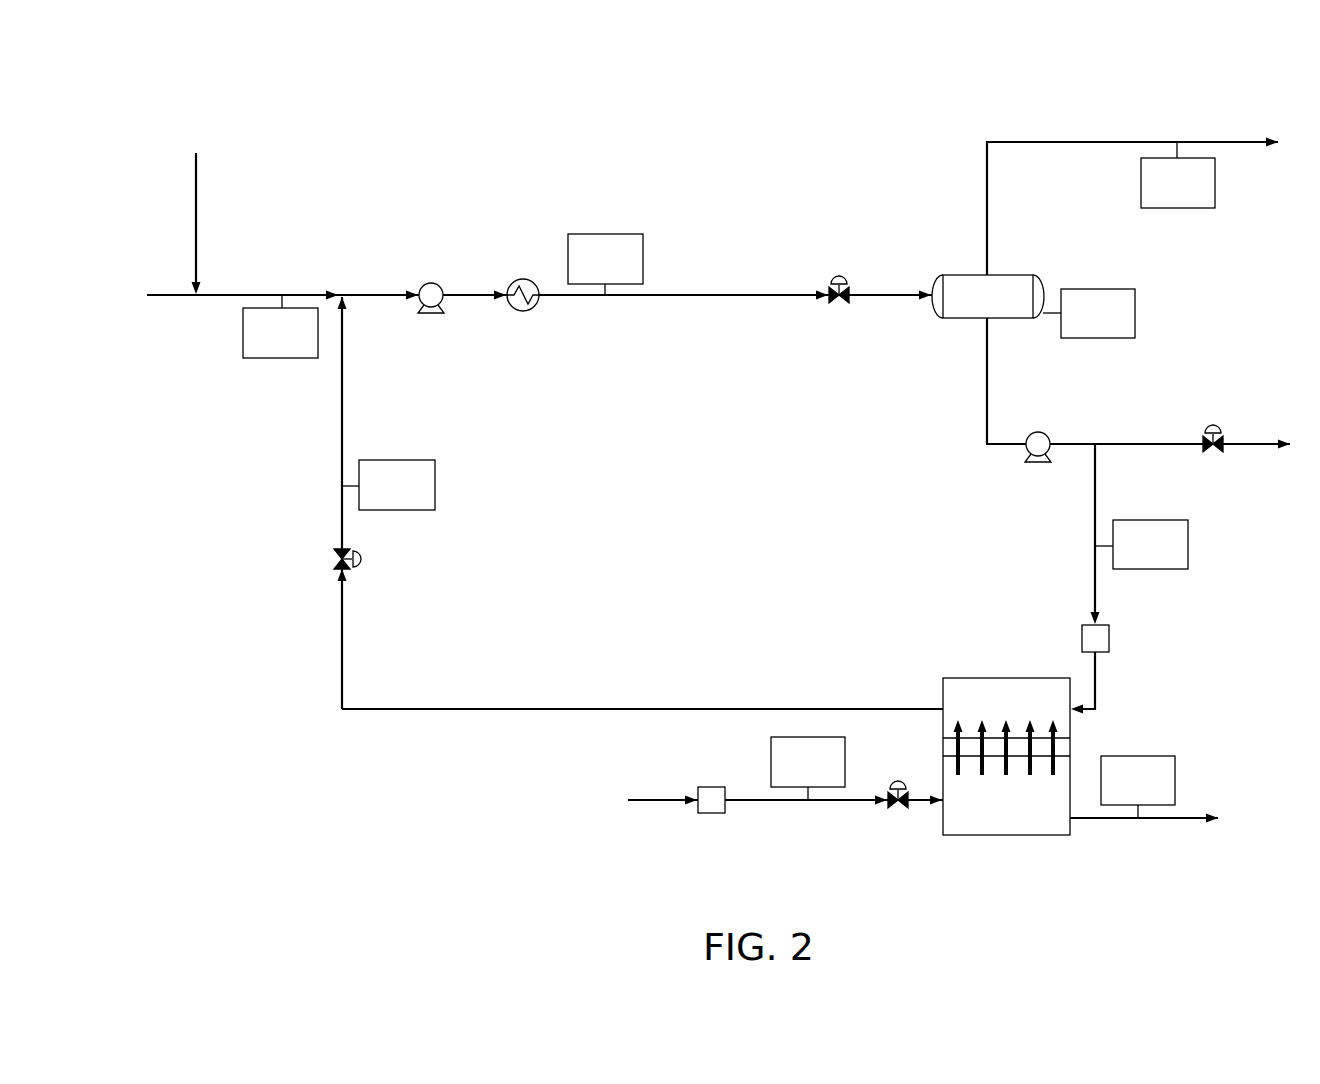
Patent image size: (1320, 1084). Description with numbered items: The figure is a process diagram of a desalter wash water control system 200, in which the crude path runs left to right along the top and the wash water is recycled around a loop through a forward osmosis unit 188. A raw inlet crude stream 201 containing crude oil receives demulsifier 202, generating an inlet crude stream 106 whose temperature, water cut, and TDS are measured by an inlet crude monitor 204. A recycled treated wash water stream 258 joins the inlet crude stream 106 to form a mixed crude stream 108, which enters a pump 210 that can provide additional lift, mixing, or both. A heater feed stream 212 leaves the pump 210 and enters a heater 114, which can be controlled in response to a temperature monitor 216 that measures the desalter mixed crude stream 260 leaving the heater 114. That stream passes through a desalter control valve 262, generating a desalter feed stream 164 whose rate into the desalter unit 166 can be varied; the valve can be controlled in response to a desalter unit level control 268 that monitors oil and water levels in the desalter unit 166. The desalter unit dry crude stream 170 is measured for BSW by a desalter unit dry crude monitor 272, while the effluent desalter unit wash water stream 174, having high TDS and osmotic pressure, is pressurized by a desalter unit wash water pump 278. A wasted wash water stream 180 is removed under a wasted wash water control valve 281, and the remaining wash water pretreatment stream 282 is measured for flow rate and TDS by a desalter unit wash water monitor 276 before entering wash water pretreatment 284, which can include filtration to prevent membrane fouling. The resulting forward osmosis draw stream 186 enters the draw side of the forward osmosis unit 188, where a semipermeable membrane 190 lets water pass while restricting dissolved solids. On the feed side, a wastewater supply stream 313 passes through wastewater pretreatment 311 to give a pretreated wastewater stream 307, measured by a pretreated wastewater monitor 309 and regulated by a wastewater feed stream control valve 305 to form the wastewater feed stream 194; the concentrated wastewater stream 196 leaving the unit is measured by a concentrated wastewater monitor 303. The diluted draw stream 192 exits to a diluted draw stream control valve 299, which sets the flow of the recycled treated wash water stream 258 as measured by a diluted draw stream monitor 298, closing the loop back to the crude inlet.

The desalter wash water control system 200 is at (198, 76).
The raw inlet crude stream 201 is at (180, 295).
The demulsifier 202 is at (196, 190).
The inlet crude stream 106 is at (222, 295).
The inlet crude monitor 204 is at (280, 326).
The mixed crude stream 108 is at (395, 295).
The pump 210 is at (429, 283).
The heater feed stream 212 is at (478, 300).
The heater 114 is at (518, 279).
The temperature monitor 216 is at (605, 264).
The desalter mixed crude stream 260 is at (745, 297).
The desalter control valve 262 is at (842, 302).
The desalter feed stream 164 is at (877, 295).
The desalter unit 166 is at (1010, 272).
The desalter unit level control 268 is at (1089, 313).
The desalter unit dry crude stream 170 is at (988, 183).
The desalter unit dry crude monitor 272 is at (1178, 175).
The desalter unit wash water stream 174 is at (988, 364).
The desalter unit wash water pump 278 is at (1043, 432).
The wasted wash water stream 180 is at (1175, 447).
The wasted wash water control valve 281 is at (1213, 453).
The wash water pretreatment stream 282 is at (1093, 565).
The desalter unit wash water monitor 276 is at (1141, 544).
The wash water pretreatment 284 is at (1110, 640).
The forward osmosis draw stream 186 is at (1097, 686).
The forward osmosis unit 188 is at (1003, 677).
The semipermeable membrane 190 is at (942, 748).
The recycled treated wash water stream 258 is at (340, 423).
The diluted draw stream monitor 298 is at (388, 485).
The diluted draw stream control valve 299 is at (336, 562).
The diluted draw stream 192 is at (580, 708).
The wastewater supply stream 313 is at (655, 800).
The wastewater pretreatment 311 is at (712, 787).
The pretreated wastewater monitor 309 is at (808, 768).
The pretreated wastewater stream 307 is at (838, 804).
The wastewater feed stream control valve 305 is at (895, 812).
The wastewater feed stream 194 is at (920, 805).
The concentrated wastewater monitor 303 is at (1138, 787).
The concentrated wastewater stream 196 is at (1192, 817).